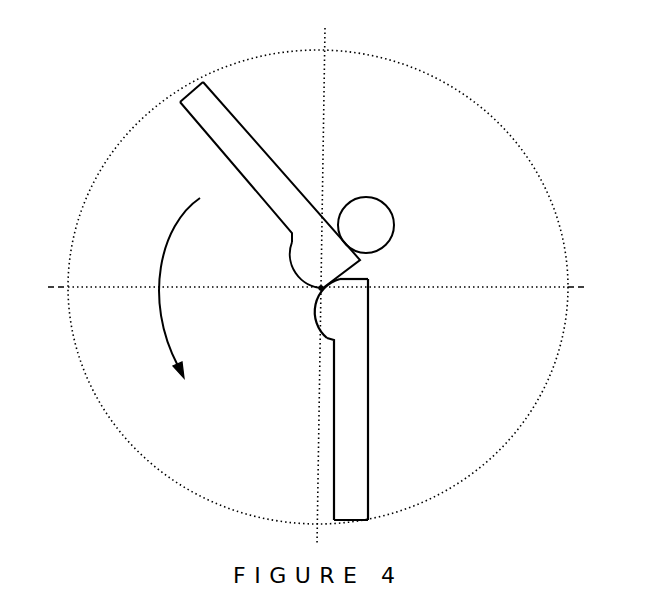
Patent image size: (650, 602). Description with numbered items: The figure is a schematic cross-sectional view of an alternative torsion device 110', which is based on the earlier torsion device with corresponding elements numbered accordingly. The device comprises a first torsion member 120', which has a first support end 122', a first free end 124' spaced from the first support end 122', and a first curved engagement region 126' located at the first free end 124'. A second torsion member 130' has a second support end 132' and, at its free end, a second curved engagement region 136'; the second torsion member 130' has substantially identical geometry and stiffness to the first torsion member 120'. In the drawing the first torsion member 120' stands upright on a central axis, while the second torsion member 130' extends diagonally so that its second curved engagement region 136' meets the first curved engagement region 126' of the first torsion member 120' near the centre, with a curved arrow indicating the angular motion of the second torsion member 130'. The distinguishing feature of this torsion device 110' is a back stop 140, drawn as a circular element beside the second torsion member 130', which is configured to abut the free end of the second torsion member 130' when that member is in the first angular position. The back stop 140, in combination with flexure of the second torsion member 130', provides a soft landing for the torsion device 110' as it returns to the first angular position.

The torsion device 110' is at (317, 274).
The first torsion member 120' is at (385, 399).
The first support end 122' is at (398, 513).
The first free end 124' is at (394, 299).
The first curved engagement region 126' is at (288, 325).
The second torsion member 130' is at (270, 185).
The second support end 132' is at (162, 131).
The second curved engagement region 136' is at (265, 265).
The back stop 140 is at (380, 198).